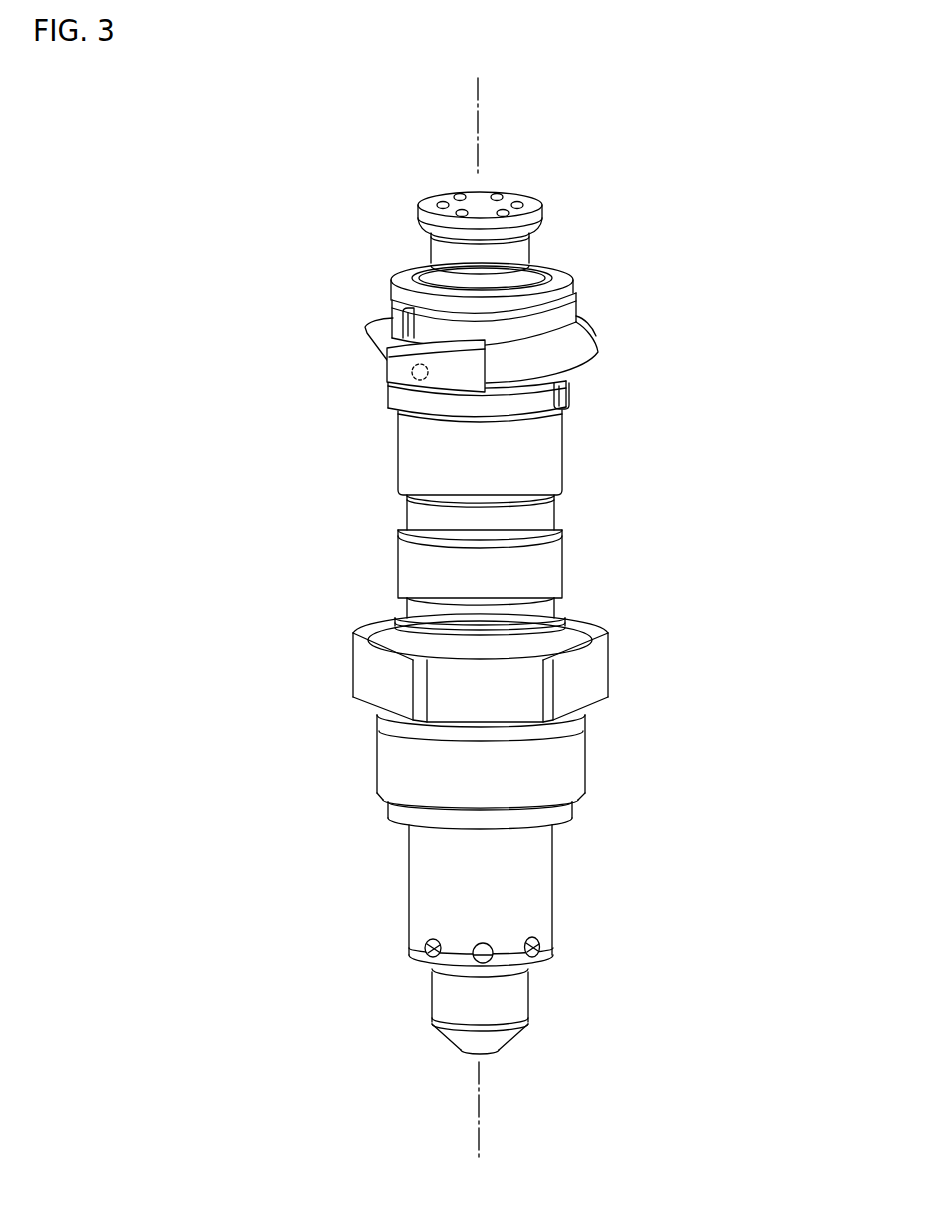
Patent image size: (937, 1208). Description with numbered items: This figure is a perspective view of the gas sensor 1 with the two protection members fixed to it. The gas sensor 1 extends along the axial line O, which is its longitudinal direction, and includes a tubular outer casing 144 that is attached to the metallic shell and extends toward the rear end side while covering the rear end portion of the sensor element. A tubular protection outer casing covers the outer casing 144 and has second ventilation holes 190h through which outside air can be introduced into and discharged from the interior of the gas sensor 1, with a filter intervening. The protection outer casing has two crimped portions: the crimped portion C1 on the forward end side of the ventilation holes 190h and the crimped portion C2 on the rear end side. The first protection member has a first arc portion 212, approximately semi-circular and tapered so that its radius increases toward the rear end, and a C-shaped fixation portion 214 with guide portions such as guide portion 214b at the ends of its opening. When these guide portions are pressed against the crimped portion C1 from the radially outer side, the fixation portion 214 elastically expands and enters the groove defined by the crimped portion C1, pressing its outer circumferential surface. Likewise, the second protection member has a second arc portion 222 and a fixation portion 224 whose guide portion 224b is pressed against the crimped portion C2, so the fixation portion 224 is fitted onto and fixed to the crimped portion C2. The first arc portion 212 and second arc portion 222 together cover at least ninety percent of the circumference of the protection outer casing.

The gas sensor 1 is at (760, 473).
The outer casing 144 is at (552, 567).
The second ventilation holes 190h is at (390, 386).
The first arc portion 212 is at (387, 362).
The fixation portion 214 is at (418, 397).
The guide portion 214b is at (569, 397).
The second arc portion 222 is at (590, 336).
The fixation portion 224 is at (560, 317).
The guide portion 224b is at (404, 314).
The crimped portion C1 is at (578, 381).
The crimped portion C2 is at (386, 299).
The axial line O is at (481, 1112).